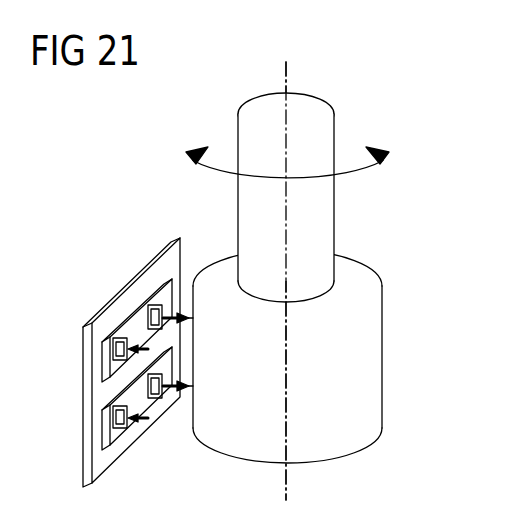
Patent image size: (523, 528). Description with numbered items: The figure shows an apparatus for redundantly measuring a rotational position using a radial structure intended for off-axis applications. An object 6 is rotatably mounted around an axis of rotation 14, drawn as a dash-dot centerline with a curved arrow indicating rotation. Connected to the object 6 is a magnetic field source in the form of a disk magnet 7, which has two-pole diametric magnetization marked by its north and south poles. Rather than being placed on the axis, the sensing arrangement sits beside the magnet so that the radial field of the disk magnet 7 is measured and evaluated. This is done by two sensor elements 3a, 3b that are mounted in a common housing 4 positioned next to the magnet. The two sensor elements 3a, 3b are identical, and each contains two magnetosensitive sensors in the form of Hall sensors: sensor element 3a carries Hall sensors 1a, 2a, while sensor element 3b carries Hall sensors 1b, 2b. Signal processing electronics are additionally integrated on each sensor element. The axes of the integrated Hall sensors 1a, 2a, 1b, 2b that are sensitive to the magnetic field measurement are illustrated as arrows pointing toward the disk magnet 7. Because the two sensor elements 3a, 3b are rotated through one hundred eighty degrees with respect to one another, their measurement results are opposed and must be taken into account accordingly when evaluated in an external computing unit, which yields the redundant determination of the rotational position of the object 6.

The Hall sensor 1a is at (118, 406).
The Hall sensor 1b is at (134, 299).
The Hall sensor 2a is at (158, 402).
The Hall sensor 2b is at (113, 327).
The sensor element 3a is at (100, 446).
The sensor element 3b is at (130, 309).
The common housing 4 is at (82, 369).
The object 6 is at (328, 232).
The disk magnet 7 is at (376, 353).
The axis of rotation 14 is at (288, 469).